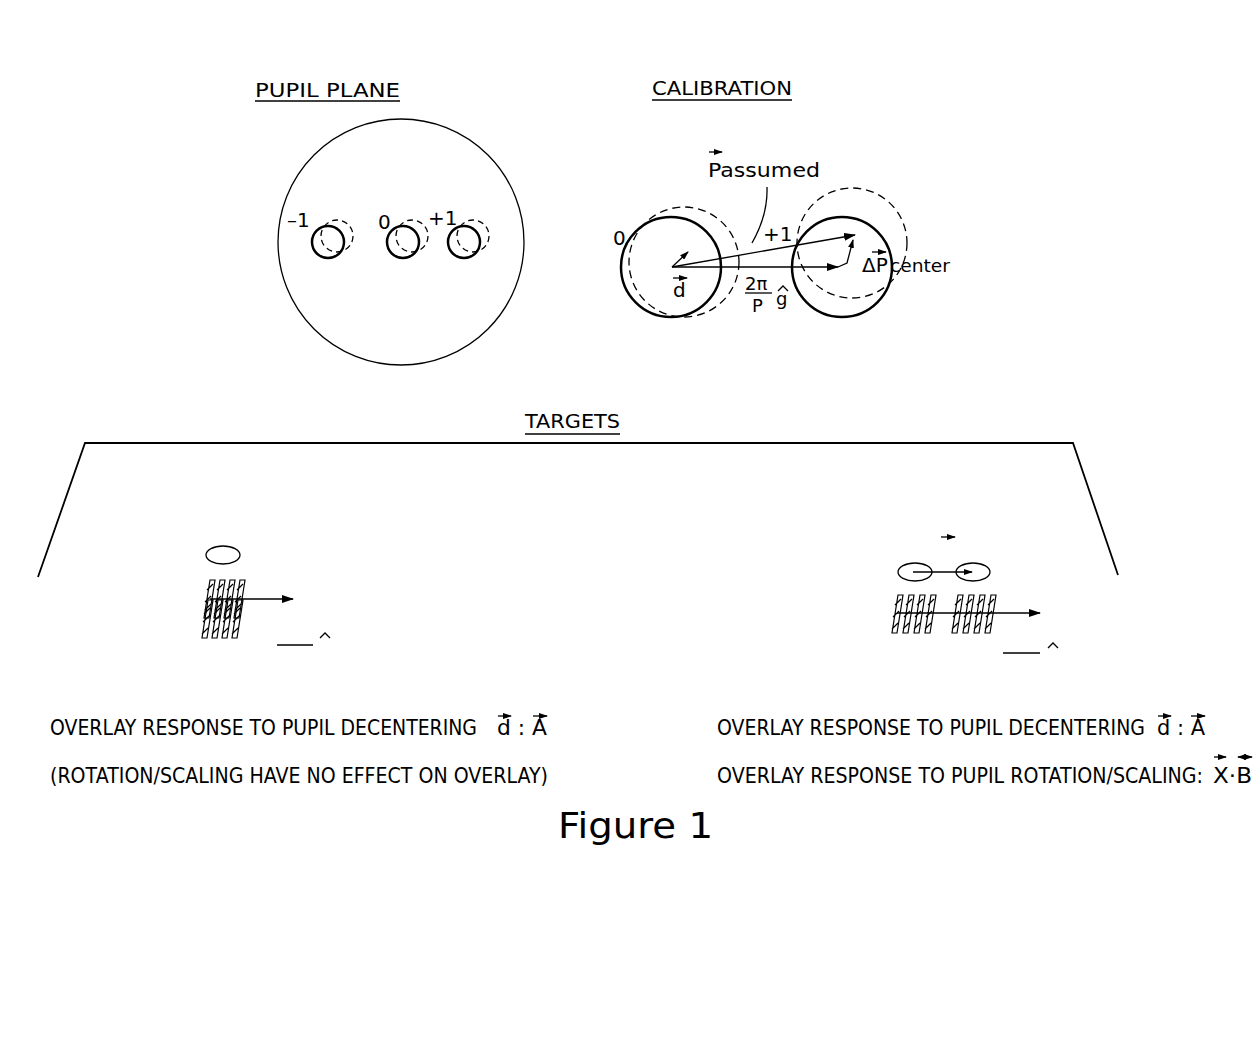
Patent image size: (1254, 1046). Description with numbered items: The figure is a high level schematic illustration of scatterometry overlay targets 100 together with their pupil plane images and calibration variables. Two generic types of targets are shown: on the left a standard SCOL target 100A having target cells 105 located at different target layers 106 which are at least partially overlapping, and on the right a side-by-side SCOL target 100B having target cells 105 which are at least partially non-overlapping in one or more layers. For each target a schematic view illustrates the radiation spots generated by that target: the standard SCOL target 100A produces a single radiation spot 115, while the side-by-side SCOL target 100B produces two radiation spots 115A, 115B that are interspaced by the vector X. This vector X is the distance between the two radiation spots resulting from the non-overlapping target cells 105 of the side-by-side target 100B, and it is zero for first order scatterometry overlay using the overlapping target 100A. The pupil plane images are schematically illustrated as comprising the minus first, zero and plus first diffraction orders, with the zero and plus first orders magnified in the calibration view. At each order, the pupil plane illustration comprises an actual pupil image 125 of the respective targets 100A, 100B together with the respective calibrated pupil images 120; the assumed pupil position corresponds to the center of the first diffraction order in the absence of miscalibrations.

The targets 100 is at (720, 443).
The standard SCOL target 100A is at (315, 492).
The side-by-side SCOL target 100B is at (868, 477).
The target cells 105 is at (195, 623).
The target layers 106 is at (195, 590).
The radiation spot 115 is at (222, 546).
The first radiation spot 115A is at (917, 563).
The second radiation spot 115B is at (982, 563).
The calibrated pupil images 120 is at (327, 226).
The actual pupil image 125 is at (348, 253).